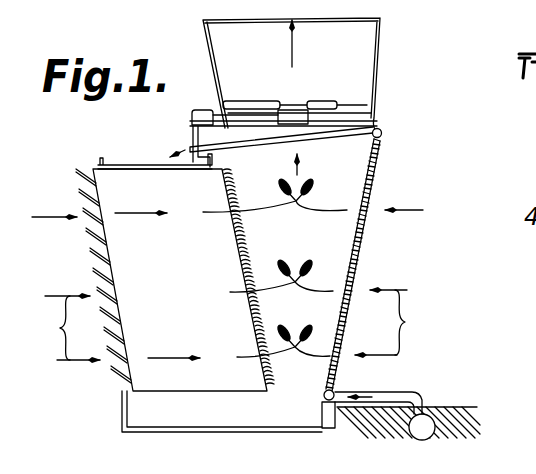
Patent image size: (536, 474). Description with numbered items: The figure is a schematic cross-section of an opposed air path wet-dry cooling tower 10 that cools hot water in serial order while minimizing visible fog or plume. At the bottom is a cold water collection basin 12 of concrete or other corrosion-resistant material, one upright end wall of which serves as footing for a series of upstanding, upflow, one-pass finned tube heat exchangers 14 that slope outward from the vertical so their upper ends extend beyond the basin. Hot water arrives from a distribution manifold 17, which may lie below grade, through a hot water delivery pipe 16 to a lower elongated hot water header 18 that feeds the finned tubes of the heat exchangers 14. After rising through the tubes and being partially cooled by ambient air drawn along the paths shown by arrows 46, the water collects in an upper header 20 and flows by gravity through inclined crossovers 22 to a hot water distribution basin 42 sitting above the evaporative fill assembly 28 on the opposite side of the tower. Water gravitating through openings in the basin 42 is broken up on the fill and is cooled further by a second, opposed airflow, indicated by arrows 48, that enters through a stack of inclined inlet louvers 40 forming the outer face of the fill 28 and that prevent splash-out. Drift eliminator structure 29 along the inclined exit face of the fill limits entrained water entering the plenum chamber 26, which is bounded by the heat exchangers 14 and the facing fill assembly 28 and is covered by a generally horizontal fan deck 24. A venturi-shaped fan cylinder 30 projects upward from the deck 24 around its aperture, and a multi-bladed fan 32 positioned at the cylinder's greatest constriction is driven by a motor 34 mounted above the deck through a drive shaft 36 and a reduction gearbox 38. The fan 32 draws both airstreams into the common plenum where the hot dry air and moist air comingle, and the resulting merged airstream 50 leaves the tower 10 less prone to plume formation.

The cooling tower 10 is at (392, 142).
The cold water collection basin 12 is at (120, 410).
The finned tube heat exchangers 14 is at (365, 247).
The hot water delivery pipe 16 is at (397, 392).
The distribution manifold 17 is at (437, 428).
The lower hot water header 18 is at (323, 396).
The upper header 20 is at (381, 130).
The crossovers 22 is at (347, 140).
The fan deck 24 is at (187, 127).
The plenum chamber 26 is at (275, 255).
The evaporative fill assembly 28 is at (180, 280).
The drift eliminator structure 29 is at (230, 182).
The fan cylinder 30 is at (378, 50).
The fan 32 is at (243, 103).
The motor 34 is at (199, 110).
The drive shaft 36 is at (258, 117).
The reduction gearbox 38 is at (311, 117).
The inlet louvers 40 is at (80, 184).
The hot water distribution basin 42 is at (118, 165).
The arrows (dry airflow) 46 is at (398, 282).
The arrows (wet airflow) 48 is at (112, 286).
The merged airstream 50 is at (293, 67).